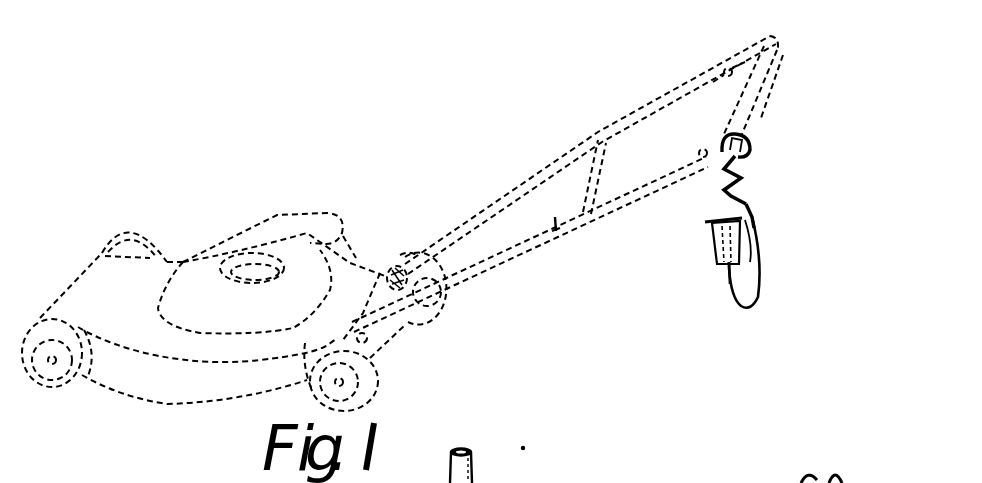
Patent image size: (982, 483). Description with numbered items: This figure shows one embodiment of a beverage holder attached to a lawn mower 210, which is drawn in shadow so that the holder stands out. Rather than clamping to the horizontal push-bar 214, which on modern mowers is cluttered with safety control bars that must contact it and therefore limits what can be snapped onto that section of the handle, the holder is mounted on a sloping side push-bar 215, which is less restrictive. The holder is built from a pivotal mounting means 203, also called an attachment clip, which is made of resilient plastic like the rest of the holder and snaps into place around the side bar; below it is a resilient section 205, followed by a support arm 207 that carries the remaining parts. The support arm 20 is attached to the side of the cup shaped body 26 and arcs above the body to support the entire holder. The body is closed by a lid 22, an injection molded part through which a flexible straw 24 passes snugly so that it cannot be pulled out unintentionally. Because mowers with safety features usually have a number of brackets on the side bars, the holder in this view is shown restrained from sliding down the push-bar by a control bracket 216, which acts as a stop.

The lawn mower 210 is at (392, 194).
The horizontal push-bar 214 is at (778, 84).
The side push-bar 215 is at (660, 173).
The control bracket 216 is at (702, 153).
The support arm 20 is at (694, 261).
The pivotal mounting means 203 is at (750, 137).
The resilient section 205 is at (747, 171).
The support arm 207 is at (754, 210).
The lid 22 is at (711, 224).
The flexible straw 24 is at (763, 272).
The body 26 is at (712, 267).